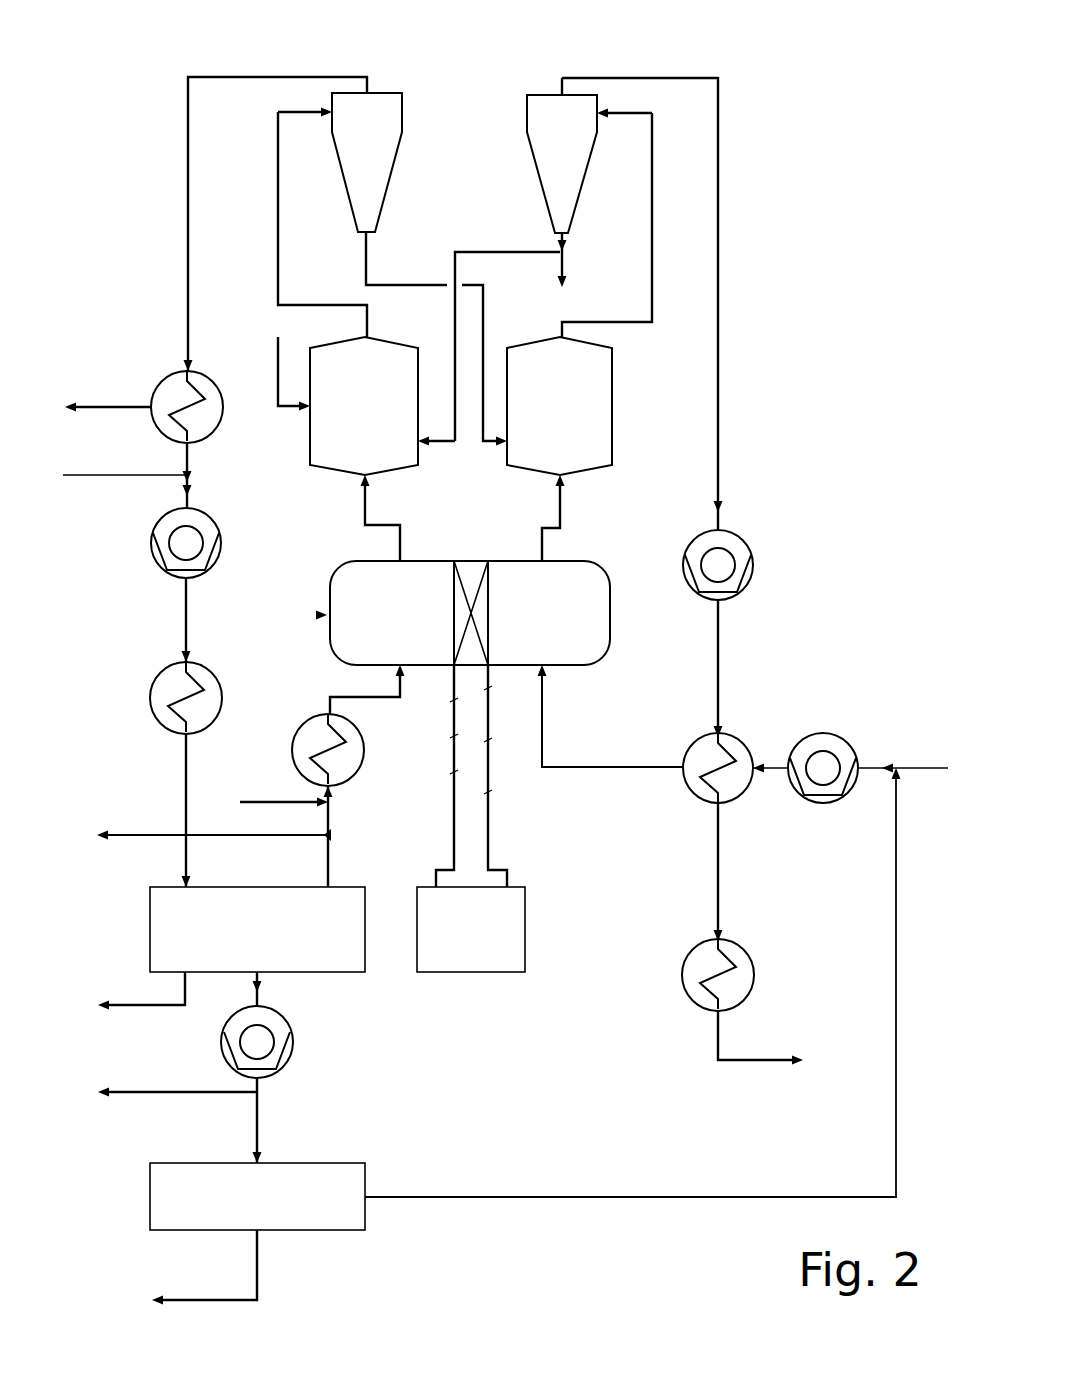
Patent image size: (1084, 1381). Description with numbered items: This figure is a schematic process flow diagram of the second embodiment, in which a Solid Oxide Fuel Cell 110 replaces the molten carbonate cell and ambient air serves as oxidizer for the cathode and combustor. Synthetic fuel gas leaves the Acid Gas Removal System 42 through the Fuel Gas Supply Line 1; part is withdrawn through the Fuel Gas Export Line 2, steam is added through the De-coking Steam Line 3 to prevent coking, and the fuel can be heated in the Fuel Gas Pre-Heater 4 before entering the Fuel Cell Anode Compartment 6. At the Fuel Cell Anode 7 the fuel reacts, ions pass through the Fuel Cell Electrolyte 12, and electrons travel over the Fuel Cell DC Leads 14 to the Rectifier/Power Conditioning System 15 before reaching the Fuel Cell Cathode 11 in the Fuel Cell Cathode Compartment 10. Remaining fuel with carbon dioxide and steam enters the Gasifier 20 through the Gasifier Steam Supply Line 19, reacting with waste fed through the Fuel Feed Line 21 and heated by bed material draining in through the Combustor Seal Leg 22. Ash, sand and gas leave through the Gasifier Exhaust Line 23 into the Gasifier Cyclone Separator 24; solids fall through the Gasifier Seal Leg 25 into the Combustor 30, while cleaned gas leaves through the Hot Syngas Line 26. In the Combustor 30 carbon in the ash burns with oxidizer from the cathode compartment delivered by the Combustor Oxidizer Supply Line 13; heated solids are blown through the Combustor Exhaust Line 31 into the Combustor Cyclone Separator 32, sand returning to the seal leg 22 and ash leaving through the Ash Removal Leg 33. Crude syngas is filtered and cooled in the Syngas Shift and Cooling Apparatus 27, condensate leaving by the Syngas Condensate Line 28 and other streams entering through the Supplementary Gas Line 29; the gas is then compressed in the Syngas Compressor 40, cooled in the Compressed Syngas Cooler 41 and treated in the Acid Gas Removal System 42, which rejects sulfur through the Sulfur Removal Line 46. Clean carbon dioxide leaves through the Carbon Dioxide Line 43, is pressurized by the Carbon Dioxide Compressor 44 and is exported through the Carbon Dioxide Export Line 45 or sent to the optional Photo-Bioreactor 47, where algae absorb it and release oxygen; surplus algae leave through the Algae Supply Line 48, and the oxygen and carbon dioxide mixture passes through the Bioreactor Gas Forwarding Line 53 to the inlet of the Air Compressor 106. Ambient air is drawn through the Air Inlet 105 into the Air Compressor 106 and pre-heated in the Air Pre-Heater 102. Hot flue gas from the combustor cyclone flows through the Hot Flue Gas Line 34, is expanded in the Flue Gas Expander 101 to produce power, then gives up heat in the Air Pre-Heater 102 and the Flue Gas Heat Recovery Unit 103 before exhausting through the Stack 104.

The fuel gas supply line 1 is at (332, 850).
The fuel gas export line 2 is at (145, 833).
The de-coking steam line 3 is at (293, 800).
The fuel gas pre-heater 4 is at (308, 718).
The fuel cell anode compartment 6 is at (365, 592).
The fuel cell anode 7 is at (450, 593).
The fuel cell cathode compartment 10 is at (613, 615).
The fuel cell cathode 11 is at (492, 582).
The fuel cell electrolyte 12 is at (473, 562).
The combustor oxidizer supply line 13 is at (563, 498).
The fuel cell DC leads 14 is at (455, 827).
The rectifier/power conditioning system 15 is at (472, 972).
The gasifier steam supply line 19 is at (362, 510).
The gasifier 20 is at (307, 442).
The fuel feed line 21 is at (272, 352).
The combustor seal leg 22 is at (462, 252).
The gasifier exhaust line 23 is at (275, 265).
The gasifier cyclone separator 24 is at (405, 113).
The gasifier seal leg 25 is at (372, 258).
The hot syngas line 26 is at (183, 143).
The syngas shift and cooling apparatus 27 is at (167, 380).
The syngas condensate line 28 is at (125, 405).
The supplementary gas line 29 is at (123, 477).
The combustor 30 is at (615, 437).
The combustor exhaust line 31 is at (657, 307).
The combustor cyclone separator 32 is at (585, 197).
The ash removal leg 33 is at (567, 268).
The hot flue gas line 34 is at (722, 317).
The syngas compressor 40 is at (150, 550).
The compressed syngas cooler 41 is at (150, 695).
The acid gas removal system 42 is at (148, 928).
The carbon dioxide line 43 is at (258, 988).
The carbon dioxide compressor 44 is at (295, 1040).
The carbon dioxide export line 45 is at (160, 1095).
The sulfur removal line 46 is at (163, 1008).
The photo-bioreactor 47 is at (183, 1162).
The algae supply line 48 is at (253, 1282).
The bioreactor gas forwarding line 53 is at (478, 1202).
The flue gas expander 101 is at (755, 562).
The air pre-heater 102 is at (738, 738).
The flue gas heat recovery unit 103 is at (680, 970).
The stack 104 is at (717, 1027).
The air inlet 105 is at (925, 768).
The air compressor 106 is at (823, 803).
The solid oxide fuel cell 110 is at (320, 616).